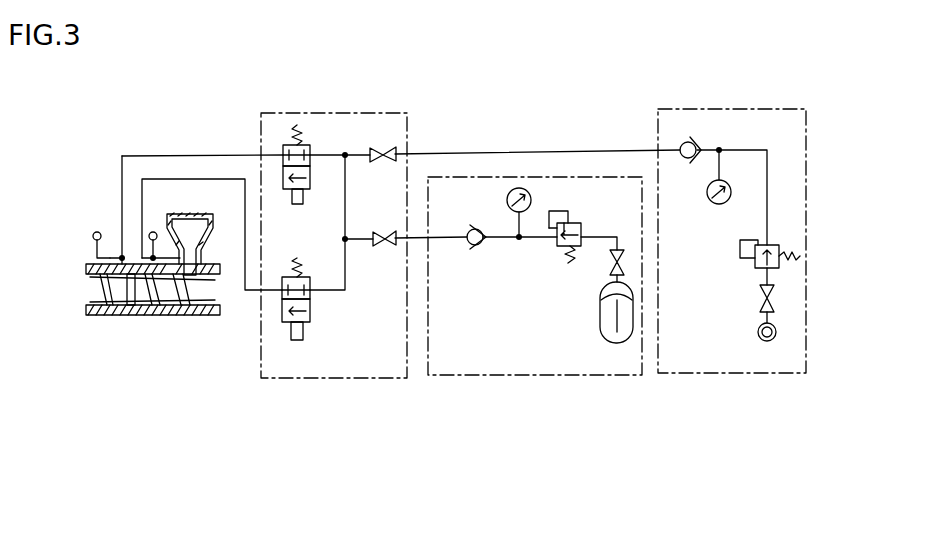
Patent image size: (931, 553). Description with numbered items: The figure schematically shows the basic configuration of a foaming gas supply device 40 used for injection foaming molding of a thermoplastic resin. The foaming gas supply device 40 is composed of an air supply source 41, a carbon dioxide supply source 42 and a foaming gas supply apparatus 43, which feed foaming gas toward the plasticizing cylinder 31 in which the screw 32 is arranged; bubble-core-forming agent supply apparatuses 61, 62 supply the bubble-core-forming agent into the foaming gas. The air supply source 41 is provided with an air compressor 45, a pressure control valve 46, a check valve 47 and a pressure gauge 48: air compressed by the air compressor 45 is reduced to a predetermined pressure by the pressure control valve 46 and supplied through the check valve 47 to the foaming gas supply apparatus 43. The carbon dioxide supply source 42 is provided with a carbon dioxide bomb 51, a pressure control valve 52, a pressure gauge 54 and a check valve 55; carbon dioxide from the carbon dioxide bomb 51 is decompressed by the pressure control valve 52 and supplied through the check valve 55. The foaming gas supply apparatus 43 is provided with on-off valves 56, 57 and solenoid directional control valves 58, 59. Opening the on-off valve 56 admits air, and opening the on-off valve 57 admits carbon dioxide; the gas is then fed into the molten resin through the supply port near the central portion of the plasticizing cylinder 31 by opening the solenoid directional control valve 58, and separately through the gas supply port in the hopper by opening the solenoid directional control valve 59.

The plasticizing cylinder 31 is at (113, 317).
The screw 32 is at (167, 297).
The foaming gas supply device 40 is at (410, 463).
The air supply source 41 is at (731, 374).
The carbon dioxide supply source 42 is at (540, 376).
The foaming gas supply apparatus 43 is at (320, 378).
The air compressor 45 is at (776, 330).
The pressure control valve 46 is at (800, 256).
The check valve 47 is at (696, 140).
The pressure gauge 48 is at (713, 204).
The carbon dioxide bomb 51 is at (617, 343).
The pressure control valve 52 is at (568, 217).
The pressure gauge 54 is at (519, 188).
The check valve 55 is at (478, 247).
The on-off valve 56 is at (390, 150).
The on-off valve 57 is at (381, 246).
The solenoid directional control valve 58 is at (298, 124).
The solenoid directional control valve 59 is at (290, 330).
The bubble-core-forming agent supply apparatus 61 is at (153, 232).
The bubble-core-forming agent supply apparatus 62 is at (97, 232).